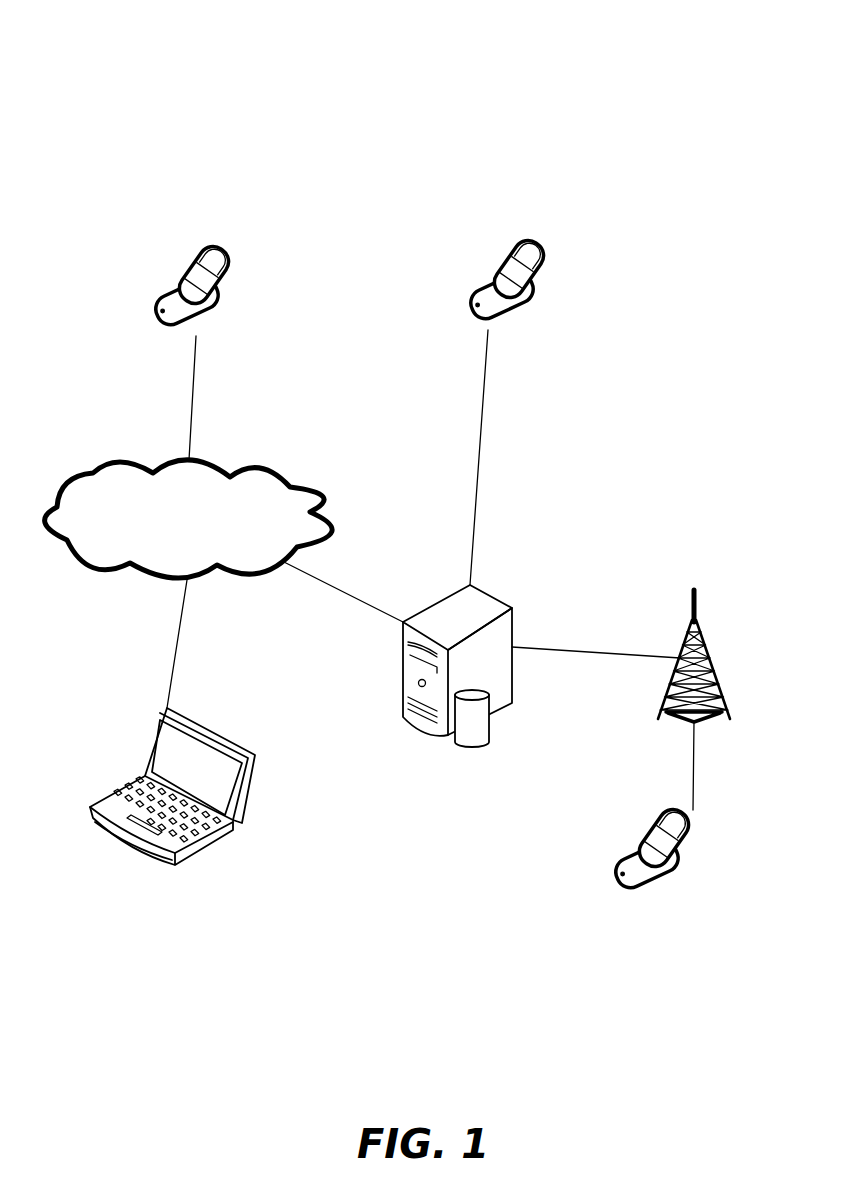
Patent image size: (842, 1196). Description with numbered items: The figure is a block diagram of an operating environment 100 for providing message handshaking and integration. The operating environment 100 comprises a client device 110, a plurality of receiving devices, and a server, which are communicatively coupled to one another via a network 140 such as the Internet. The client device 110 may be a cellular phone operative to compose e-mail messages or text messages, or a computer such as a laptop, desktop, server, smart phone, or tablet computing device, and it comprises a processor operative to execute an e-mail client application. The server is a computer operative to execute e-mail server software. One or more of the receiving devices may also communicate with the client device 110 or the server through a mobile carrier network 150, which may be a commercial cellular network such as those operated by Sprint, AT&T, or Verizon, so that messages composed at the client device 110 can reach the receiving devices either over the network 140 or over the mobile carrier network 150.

The operating environment 100 is at (440, 31).
The client device 110 is at (157, 740).
The network 140 is at (95, 473).
The mobile carrier network 150 is at (693, 602).